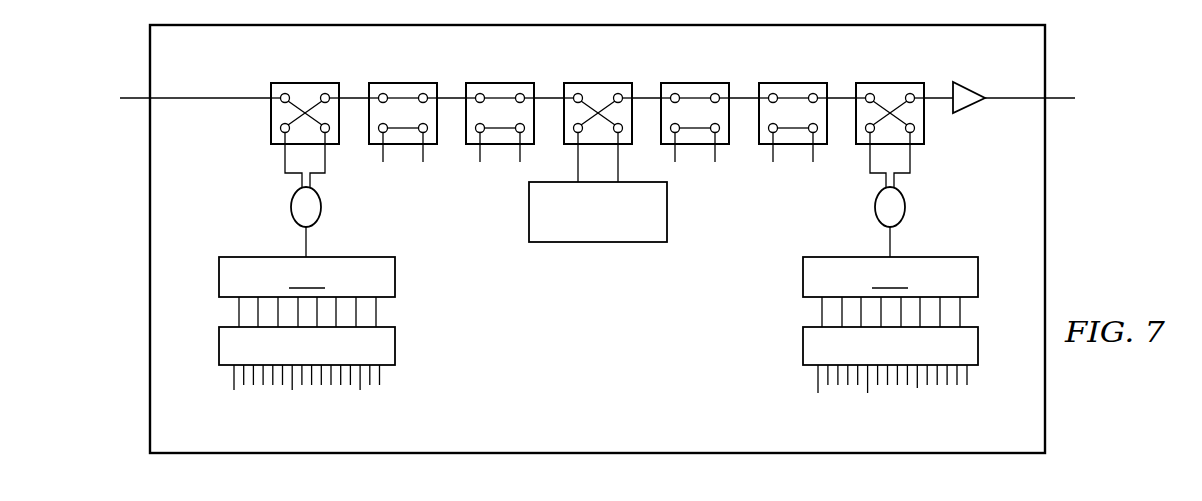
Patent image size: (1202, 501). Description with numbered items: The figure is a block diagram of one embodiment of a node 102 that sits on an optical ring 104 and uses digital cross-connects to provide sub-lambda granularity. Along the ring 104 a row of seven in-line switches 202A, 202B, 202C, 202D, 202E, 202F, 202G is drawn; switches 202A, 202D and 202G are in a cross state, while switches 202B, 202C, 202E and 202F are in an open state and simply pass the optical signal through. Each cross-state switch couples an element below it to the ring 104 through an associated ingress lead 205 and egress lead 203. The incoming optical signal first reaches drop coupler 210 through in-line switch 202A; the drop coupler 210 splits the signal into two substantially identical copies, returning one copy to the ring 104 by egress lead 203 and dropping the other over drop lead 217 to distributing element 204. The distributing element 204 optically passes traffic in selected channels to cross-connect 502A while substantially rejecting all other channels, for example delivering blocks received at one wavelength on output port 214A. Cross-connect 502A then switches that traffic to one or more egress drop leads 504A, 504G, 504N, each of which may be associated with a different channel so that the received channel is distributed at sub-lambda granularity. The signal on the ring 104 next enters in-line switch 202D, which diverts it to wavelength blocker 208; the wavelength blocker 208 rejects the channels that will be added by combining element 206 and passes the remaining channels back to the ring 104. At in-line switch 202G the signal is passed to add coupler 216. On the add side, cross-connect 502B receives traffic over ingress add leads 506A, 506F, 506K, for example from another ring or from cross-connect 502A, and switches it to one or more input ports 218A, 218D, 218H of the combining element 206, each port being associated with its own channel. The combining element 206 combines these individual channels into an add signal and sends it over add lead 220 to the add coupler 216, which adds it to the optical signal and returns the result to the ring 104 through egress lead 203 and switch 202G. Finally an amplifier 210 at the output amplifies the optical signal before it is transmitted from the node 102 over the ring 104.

The node 102 is at (148, 305).
The ring 104 is at (1069, 91).
The in-line switch 202A is at (308, 83).
The in-line switch 202B is at (402, 83).
The in-line switch 202C is at (502, 83).
The in-line switch 202D is at (600, 83).
The in-line switch 202E is at (714, 83).
The in-line switch 202F is at (812, 83).
The in-line switch 202G is at (910, 83).
The egress lead 203 is at (284, 162).
The ingress lead 205 is at (326, 163).
The distributing element 204 is at (307, 277).
The combining element 206 is at (890, 277).
The wavelength blocker 208 is at (529, 212).
The drop coupler 210 is at (968, 84).
The output port 214A is at (237, 308).
The add coupler 216 is at (906, 203).
The drop lead 217 is at (305, 248).
The input port 218A is at (822, 308).
The input port 218D is at (879, 306).
The input port 218H is at (960, 308).
The add lead 220 is at (891, 248).
The cross-connect 502A is at (395, 345).
The cross-connect 502B is at (803, 344).
The egress drop lead 504A is at (233, 388).
The egress drop lead 504G is at (292, 388).
The egress drop lead 504N is at (360, 388).
The ingress add lead 506A is at (817, 390).
The ingress add lead 506F is at (867, 390).
The ingress add lead 506K is at (917, 385).